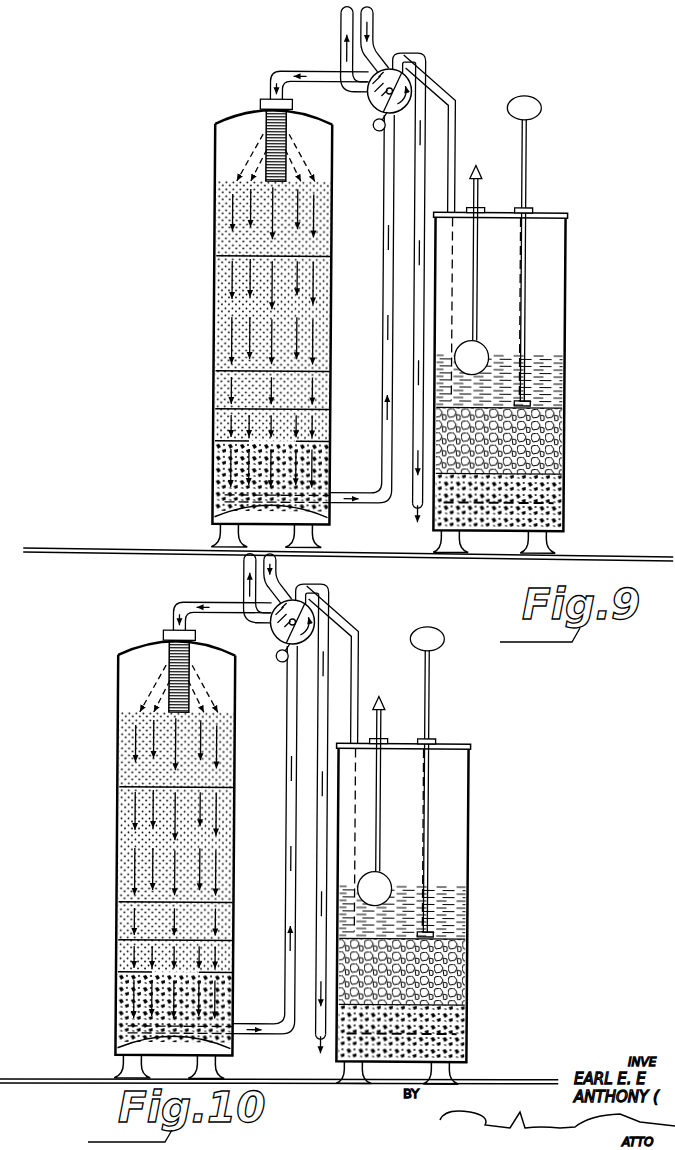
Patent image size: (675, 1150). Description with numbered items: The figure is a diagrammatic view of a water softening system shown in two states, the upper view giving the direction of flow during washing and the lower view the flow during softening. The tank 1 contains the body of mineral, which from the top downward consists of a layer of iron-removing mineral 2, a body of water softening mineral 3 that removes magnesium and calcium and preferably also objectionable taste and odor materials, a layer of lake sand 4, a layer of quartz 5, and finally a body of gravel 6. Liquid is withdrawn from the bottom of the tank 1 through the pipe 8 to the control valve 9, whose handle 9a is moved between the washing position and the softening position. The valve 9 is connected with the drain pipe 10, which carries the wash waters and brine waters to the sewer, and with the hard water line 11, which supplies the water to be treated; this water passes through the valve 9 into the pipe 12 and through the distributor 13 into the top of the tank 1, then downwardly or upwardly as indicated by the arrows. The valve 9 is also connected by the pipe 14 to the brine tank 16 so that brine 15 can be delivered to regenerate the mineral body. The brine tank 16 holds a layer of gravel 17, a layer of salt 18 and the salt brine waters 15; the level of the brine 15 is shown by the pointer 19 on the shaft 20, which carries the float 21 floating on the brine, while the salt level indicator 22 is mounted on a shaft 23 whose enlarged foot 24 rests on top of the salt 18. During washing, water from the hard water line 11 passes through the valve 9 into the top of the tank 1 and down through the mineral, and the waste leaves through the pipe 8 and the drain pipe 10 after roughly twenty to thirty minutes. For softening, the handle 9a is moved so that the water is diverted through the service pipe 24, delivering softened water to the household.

In FIG. 9, the tank 1 is at (214, 372).
In FIG. 10, the tank 1 is at (169, 860).
In FIG. 9, the layer of iron-removing mineral 2 is at (215, 223).
In FIG. 10, the layer of iron-removing mineral 2 is at (158, 750).
In FIG. 9, the body of water softening mineral 3 is at (215, 297).
In FIG. 10, the body of water softening mineral 3 is at (156, 845).
In FIG. 9, the layer of lake sand 4 is at (217, 398).
In FIG. 10, the layer of lake sand 4 is at (157, 921).
In FIG. 9, the layer of quartz 5 is at (223, 426).
In FIG. 10, the layer of quartz 5 is at (158, 956).
In FIG. 9, the body of gravel 6 is at (215, 471).
In FIG. 10, the body of gravel 6 is at (157, 1007).
In FIG. 9, the pipe 8 is at (383, 325).
In FIG. 10, the pipe 8 is at (213, 839).
In FIG. 9, the control valve 9 is at (370, 110).
In FIG. 10, the control valve 9 is at (279, 625).
In FIG. 9, the handle 9a is at (374, 131).
In FIG. 10, the handle 9a is at (270, 671).
In FIG. 9, the drain pipe 10 is at (414, 176).
In FIG. 10, the drain pipe 10 is at (308, 818).
In FIG. 9, the hard water line 11 is at (371, 37).
In FIG. 10, the hard water line 11 is at (286, 578).
In FIG. 9, the pipe 12 is at (292, 72).
In FIG. 10, the pipe 12 is at (222, 607).
In FIG. 9, the distributor 13 is at (286, 125).
In FIG. 10, the distributor 13 is at (197, 667).
In FIG. 9, the pipe 14 is at (433, 86).
In FIG. 10, the pipe 14 is at (339, 664).
In FIG. 9, the brine 15 is at (556, 375).
In FIG. 10, the brine 15 is at (419, 911).
In FIG. 9, the brine tank 16 is at (566, 287).
In FIG. 10, the brine tank 16 is at (417, 913).
In FIG. 9, the layer of gravel 17 is at (559, 503).
In FIG. 10, the layer of gravel 17 is at (419, 1032).
In FIG. 9, the layer of salt 18 is at (561, 455).
In FIG. 10, the layer of salt 18 is at (419, 971).
In FIG. 9, the pointer 19 is at (477, 170).
In FIG. 10, the pointer 19 is at (392, 709).
In FIG. 9, the shaft 20 is at (478, 277).
In FIG. 10, the shaft 20 is at (395, 791).
In FIG. 9, the float 21 is at (477, 345).
In FIG. 10, the float 21 is at (385, 874).
In FIG. 9, the salt level indicator 22 is at (532, 101).
In FIG. 10, the salt level indicator 22 is at (440, 623).
In FIG. 9, the shaft 23 is at (526, 172).
In FIG. 10, the shaft 23 is at (443, 791).
In FIG. 9, the enlarged foot / service pipe 24 is at (338, 23).
In FIG. 10, the enlarged foot / service pipe 24 is at (341, 747).